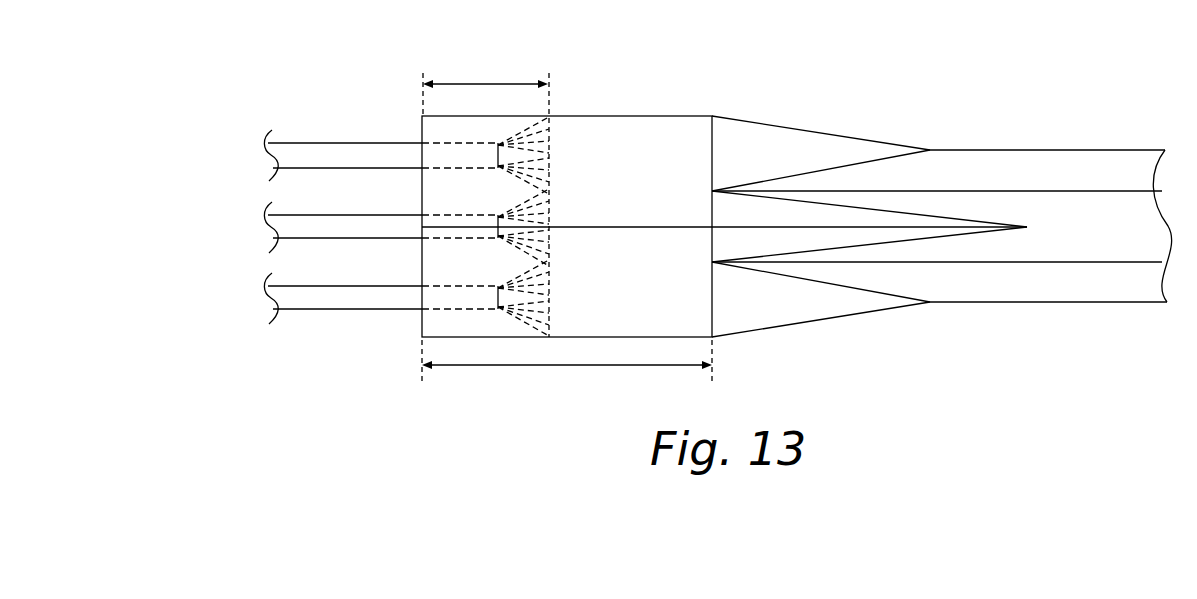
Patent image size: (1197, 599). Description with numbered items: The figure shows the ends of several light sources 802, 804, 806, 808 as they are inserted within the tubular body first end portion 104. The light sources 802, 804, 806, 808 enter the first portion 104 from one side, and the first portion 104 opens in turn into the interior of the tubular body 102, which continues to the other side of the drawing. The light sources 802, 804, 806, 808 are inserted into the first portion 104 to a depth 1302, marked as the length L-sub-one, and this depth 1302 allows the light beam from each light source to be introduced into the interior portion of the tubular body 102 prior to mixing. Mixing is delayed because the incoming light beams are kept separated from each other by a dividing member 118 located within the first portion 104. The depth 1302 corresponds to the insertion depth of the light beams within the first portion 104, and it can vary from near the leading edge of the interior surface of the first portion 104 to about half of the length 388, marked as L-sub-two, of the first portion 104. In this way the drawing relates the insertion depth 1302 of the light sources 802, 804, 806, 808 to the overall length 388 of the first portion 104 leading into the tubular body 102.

The tubular body 102 is at (1052, 116).
The tubular body first end portion 104 is at (655, 97).
The dividing member 118 is at (400, 122).
The length of first portion 388 is at (540, 367).
The light source 802 is at (305, 143).
The light source 804 is at (357, 225).
The light source 808 is at (295, 215).
The light source 806 is at (305, 312).
The depth 1302 is at (467, 83).